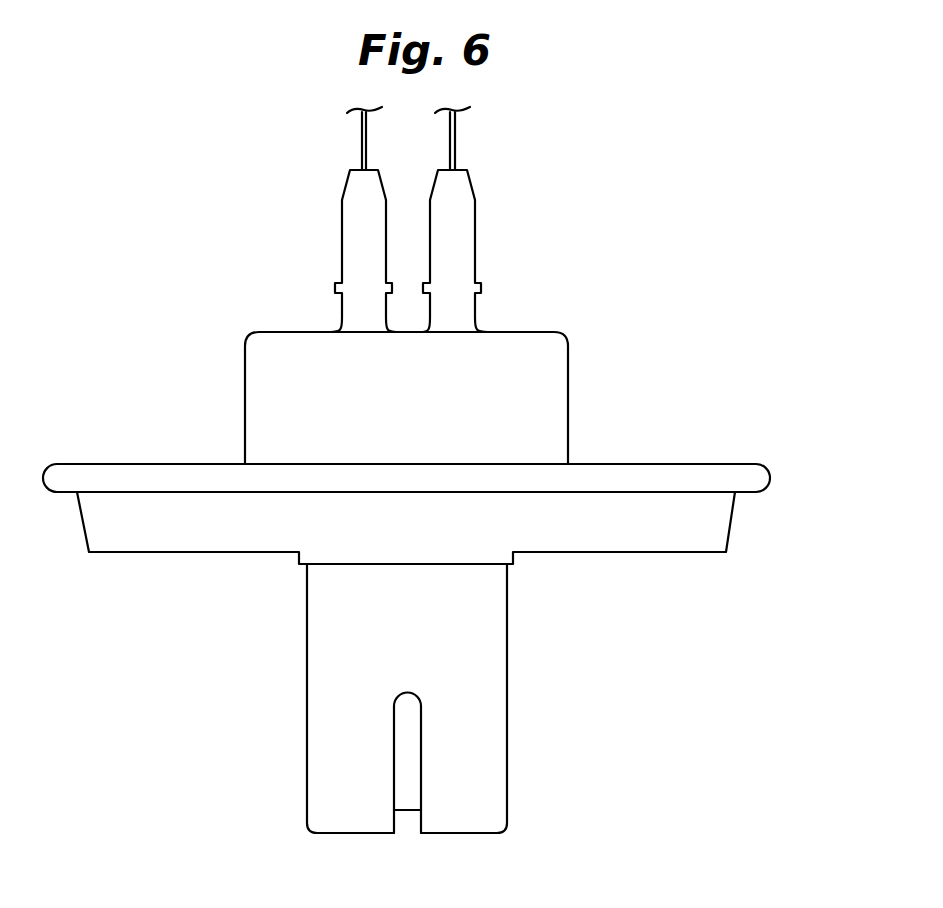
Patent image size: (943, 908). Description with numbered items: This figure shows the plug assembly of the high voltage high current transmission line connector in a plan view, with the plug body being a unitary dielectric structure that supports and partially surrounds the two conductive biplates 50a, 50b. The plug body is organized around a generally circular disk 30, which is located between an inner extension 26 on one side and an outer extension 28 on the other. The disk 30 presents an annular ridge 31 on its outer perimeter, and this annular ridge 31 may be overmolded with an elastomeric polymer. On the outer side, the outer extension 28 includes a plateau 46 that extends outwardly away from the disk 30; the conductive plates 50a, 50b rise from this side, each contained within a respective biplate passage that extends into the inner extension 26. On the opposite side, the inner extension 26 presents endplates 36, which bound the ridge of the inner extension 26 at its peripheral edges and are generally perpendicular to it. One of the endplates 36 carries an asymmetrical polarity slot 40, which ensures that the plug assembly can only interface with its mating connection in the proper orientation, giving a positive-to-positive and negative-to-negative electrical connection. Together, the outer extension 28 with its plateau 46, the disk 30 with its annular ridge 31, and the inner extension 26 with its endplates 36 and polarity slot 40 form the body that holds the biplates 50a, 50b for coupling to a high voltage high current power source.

The conductive biplate 50a is at (358, 140).
The conductive biplate 50b is at (457, 138).
The outer extension 28 is at (467, 305).
The plateau 46 is at (542, 348).
The disk 30 is at (620, 463).
The annular ridge 31 is at (773, 480).
The inner extension 26 is at (497, 600).
The endplate 36 is at (508, 703).
The asymmetrical polarity slot 40 is at (403, 812).